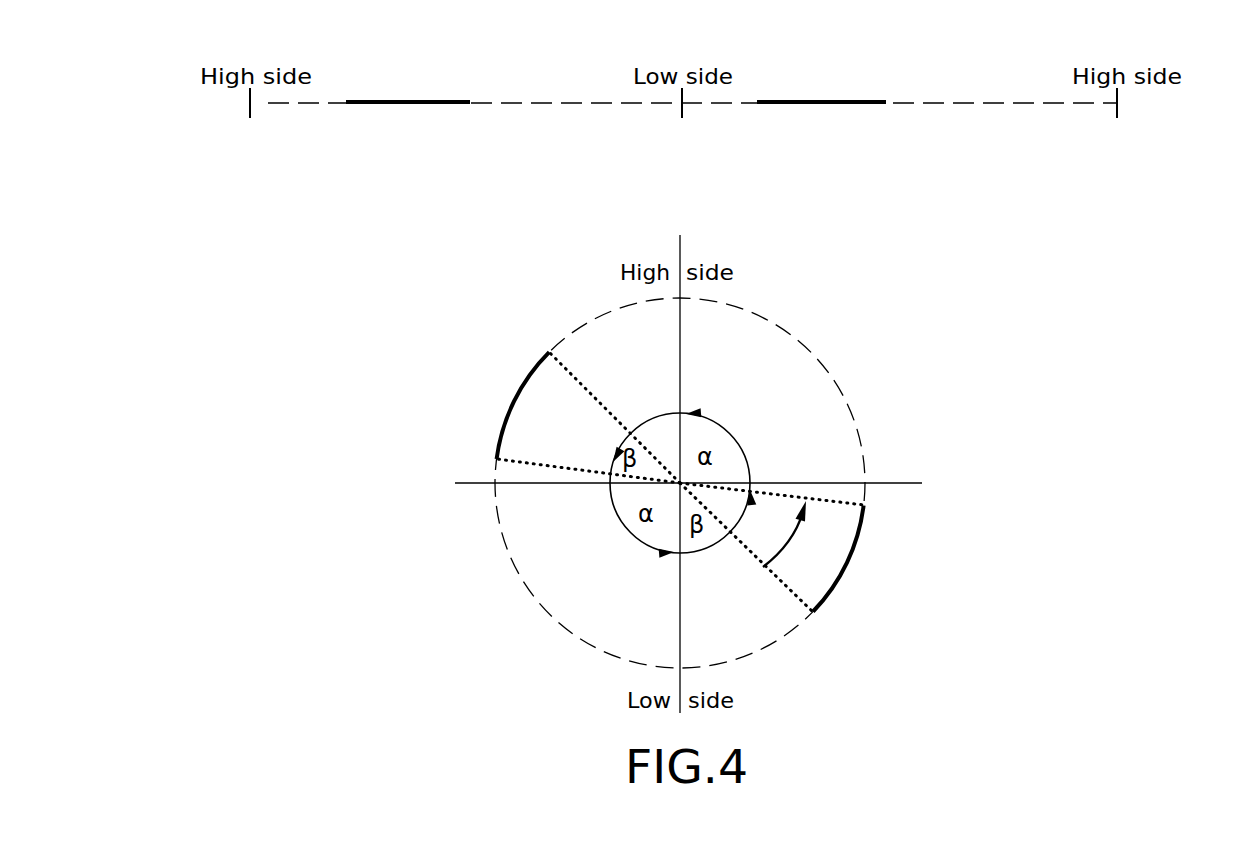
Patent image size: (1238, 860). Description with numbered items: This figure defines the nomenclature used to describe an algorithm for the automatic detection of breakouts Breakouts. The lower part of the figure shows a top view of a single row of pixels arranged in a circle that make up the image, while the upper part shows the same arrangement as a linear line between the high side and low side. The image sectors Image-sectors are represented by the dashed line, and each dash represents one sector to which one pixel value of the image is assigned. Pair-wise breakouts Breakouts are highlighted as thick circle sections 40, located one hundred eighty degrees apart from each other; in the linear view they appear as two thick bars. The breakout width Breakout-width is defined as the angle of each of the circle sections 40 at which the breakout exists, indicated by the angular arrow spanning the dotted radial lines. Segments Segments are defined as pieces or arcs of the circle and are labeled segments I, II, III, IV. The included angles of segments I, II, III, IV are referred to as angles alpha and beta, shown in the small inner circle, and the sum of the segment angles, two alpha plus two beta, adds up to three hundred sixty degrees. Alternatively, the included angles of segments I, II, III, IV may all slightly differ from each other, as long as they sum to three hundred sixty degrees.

The circle section 40 is at (508, 418).
The segment I is at (588, 417).
The segment II is at (644, 578).
The segment III is at (772, 547).
The segment IV is at (717, 391).
The breakouts Breakouts is at (430, 120).
The image sectors Image-sectors is at (1027, 115).
The breakout width Breakout-width is at (814, 545).
The segments Segments is at (658, 625).